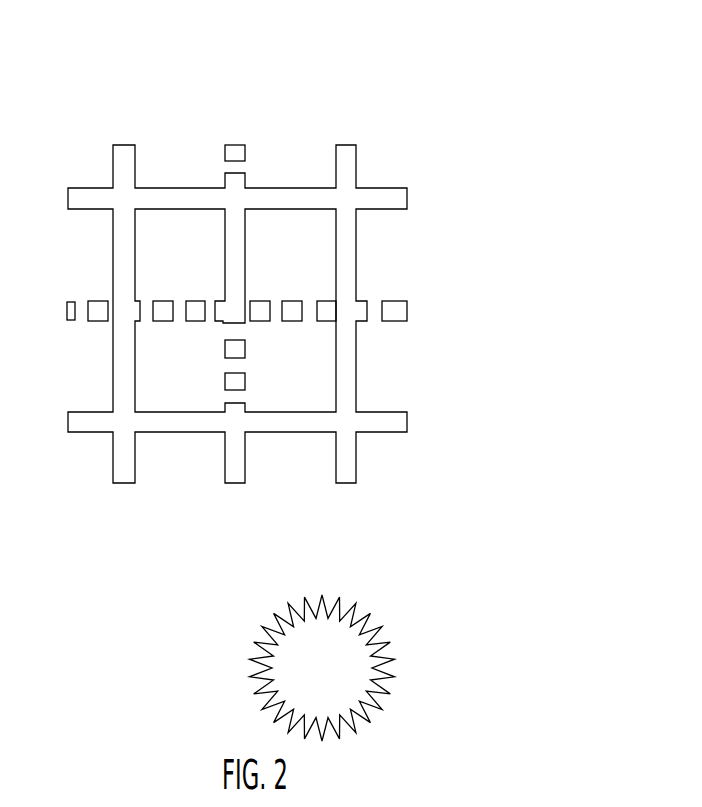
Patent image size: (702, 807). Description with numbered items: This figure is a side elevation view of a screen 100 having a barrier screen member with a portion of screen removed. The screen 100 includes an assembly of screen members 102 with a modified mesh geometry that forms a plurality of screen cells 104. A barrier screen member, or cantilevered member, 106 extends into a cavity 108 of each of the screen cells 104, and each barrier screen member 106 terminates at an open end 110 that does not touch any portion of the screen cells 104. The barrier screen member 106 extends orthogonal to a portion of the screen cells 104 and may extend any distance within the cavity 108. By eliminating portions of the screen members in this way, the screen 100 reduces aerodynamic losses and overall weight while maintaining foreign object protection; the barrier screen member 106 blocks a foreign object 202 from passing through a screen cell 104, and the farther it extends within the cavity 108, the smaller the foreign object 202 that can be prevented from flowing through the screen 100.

The screen 100 is at (369, 76).
The screen members 102 is at (113, 150).
The screen cells 104 is at (192, 153).
The barrier screen member 106 is at (246, 233).
The cavity 108 is at (163, 395).
The open end 110 is at (246, 307).
The foreign object 202 is at (295, 378).